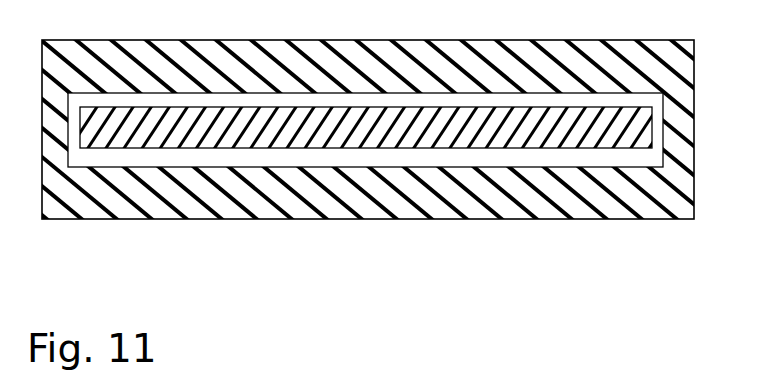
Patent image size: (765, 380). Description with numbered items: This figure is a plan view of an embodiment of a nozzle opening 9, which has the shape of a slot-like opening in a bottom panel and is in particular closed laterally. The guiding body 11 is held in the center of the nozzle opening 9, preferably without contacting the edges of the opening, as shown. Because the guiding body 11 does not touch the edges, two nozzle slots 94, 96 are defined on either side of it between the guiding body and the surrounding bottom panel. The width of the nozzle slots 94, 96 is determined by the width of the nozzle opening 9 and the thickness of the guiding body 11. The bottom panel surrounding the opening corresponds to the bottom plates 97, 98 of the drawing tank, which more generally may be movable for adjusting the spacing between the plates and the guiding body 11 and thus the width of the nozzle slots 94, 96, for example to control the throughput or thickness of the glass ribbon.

The nozzle opening 9 is at (283, 157).
The guiding body 11 is at (472, 150).
The nozzle slot 94 is at (500, 97).
The nozzle slot 96 is at (384, 156).
The bottom plate 97 is at (631, 218).
The bottom plate 98 is at (272, 379).